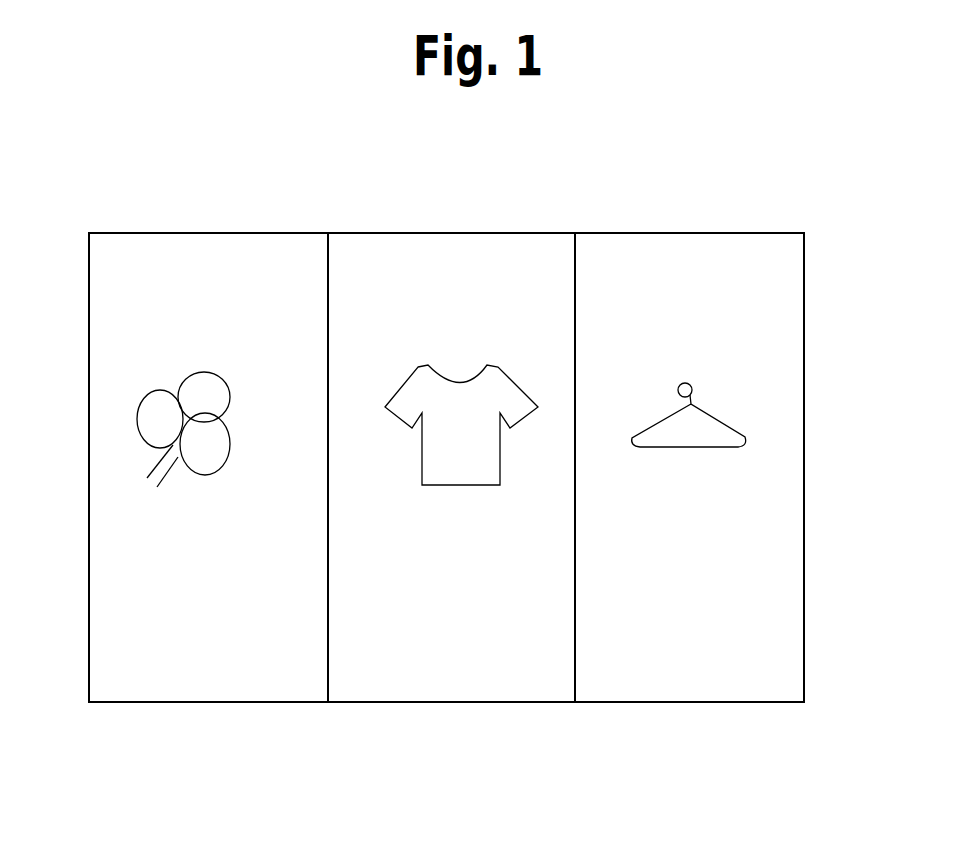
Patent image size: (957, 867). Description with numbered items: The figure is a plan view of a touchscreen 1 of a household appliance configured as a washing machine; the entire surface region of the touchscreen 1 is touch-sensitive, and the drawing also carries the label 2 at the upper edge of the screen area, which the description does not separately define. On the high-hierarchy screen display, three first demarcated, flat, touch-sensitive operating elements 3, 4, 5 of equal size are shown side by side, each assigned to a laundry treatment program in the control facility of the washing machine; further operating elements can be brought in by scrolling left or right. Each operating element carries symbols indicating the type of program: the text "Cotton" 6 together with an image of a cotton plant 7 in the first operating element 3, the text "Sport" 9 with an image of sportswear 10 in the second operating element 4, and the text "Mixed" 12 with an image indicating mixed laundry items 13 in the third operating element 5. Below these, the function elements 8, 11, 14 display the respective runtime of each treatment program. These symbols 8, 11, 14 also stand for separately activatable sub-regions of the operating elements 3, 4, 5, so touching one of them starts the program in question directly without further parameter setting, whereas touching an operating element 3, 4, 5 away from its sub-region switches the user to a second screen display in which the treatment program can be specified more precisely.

The touchscreen 1 is at (434, 445).
The display screen 2 is at (208, 233).
The first operating element 3 is at (192, 673).
The first operating element 4 is at (453, 665).
The first operating element 5 is at (712, 678).
The text "Cotton" 6 is at (130, 290).
The image of a cotton plant 7 is at (137, 425).
The function element 8 is at (167, 573).
The text "Sport" 9 is at (415, 295).
The image of sportswear 10 is at (426, 478).
The function element 11 is at (458, 587).
The text "Mixed" 12 is at (730, 317).
The image indicating mixed laundry items 13 is at (715, 427).
The function element 14 is at (752, 570).